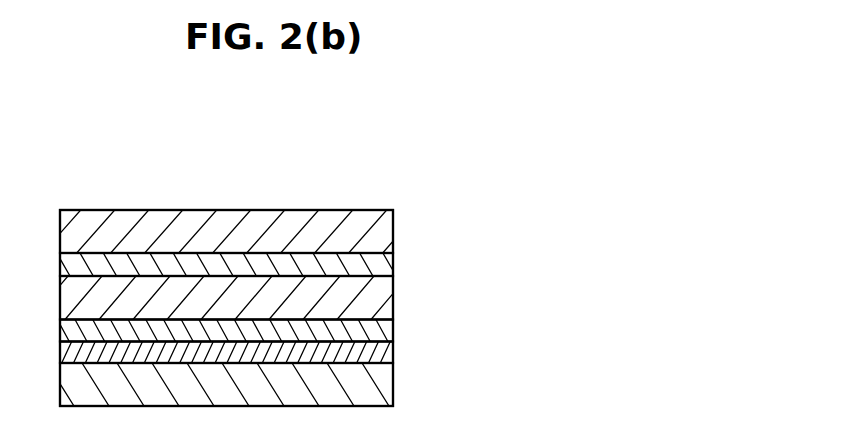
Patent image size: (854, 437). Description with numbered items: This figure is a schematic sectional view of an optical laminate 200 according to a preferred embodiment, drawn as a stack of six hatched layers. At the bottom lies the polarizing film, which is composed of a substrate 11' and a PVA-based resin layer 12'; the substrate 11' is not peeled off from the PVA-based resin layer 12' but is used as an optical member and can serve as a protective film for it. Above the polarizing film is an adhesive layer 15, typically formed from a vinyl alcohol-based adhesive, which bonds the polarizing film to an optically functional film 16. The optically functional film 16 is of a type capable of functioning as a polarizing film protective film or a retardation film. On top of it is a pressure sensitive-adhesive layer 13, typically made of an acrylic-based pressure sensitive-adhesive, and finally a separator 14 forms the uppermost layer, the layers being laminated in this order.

The optical laminate 200 is at (355, 185).
The separator 14 is at (380, 227).
The pressure sensitive-adhesive layer 13 is at (378, 262).
The optically functional film 16 is at (380, 296).
The adhesive layer 15 is at (378, 328).
The PVA-based resin layer 12' is at (271, 364).
The substrate 11' is at (264, 391).